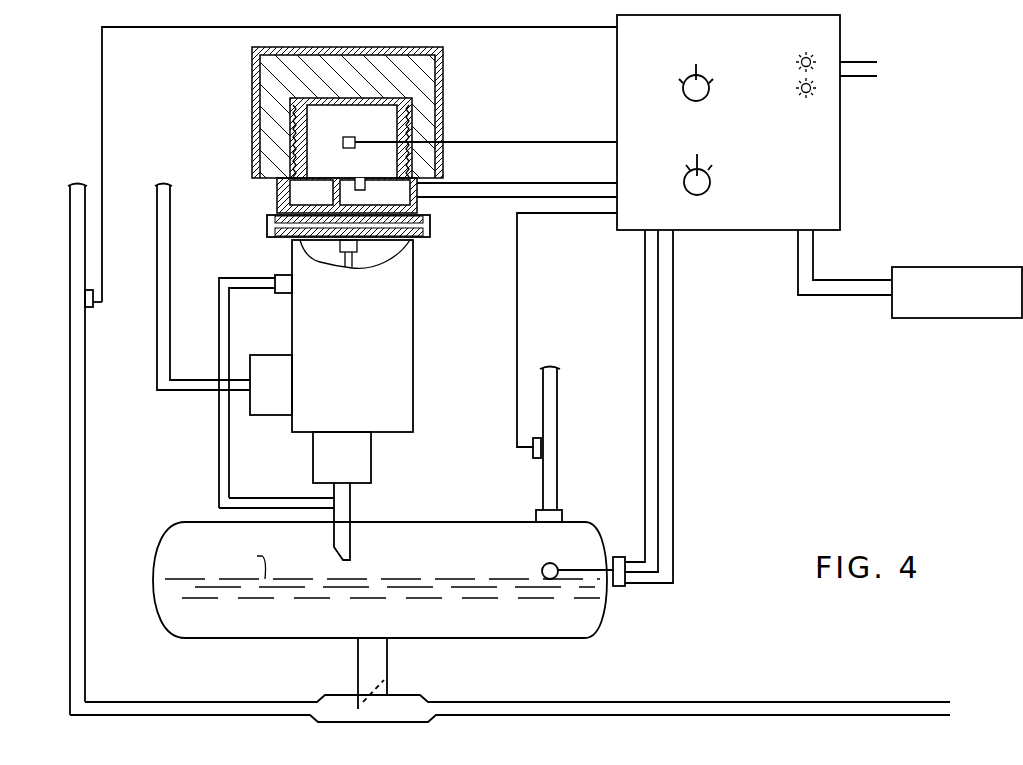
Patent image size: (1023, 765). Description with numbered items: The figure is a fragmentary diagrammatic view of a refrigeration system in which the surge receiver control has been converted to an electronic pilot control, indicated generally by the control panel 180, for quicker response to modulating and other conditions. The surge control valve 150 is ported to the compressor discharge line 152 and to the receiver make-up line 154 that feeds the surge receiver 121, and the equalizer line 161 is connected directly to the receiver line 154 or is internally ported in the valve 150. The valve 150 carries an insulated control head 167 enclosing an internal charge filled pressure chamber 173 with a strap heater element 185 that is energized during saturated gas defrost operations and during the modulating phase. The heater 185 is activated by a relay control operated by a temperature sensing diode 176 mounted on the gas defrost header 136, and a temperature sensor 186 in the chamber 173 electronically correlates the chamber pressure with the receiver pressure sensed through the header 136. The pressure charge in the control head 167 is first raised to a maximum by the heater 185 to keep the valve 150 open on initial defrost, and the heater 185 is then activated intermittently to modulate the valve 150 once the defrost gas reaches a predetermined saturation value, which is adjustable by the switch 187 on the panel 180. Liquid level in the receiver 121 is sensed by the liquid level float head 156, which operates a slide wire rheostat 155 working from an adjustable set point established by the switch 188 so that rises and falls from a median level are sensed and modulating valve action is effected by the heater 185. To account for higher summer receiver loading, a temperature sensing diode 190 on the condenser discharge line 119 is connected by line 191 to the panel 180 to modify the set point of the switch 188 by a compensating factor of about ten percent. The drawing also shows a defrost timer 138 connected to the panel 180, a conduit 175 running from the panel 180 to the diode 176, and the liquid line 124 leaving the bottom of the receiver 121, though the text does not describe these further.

The condenser discharge line 119 is at (70, 408).
The surge receiver 121 is at (179, 518).
The liquid refrigerant line 124 is at (870, 695).
The gas defrost header 136 is at (557, 410).
The defrost timer 138 is at (990, 318).
The surge control valve 150 is at (485, 291).
The compressor discharge line 152 is at (170, 232).
The receiver make-up line 154 is at (350, 497).
The slide wire rheostat 155 is at (626, 589).
The liquid level float head 156 is at (550, 563).
The equalizer line 161 is at (219, 441).
The insulated control head 167 is at (251, 112).
The pressure chamber 173 is at (387, 115).
The conduit 175 is at (517, 285).
The temperature sensing diode 176 is at (533, 458).
The control panel 180 is at (843, 143).
The strap heater element 185 is at (292, 143).
The temperature sensor 186 is at (355, 139).
The switch 187 is at (710, 184).
The switch 188 is at (683, 89).
The temperature sensing diode 190 is at (93, 308).
The line 191 is at (103, 67).